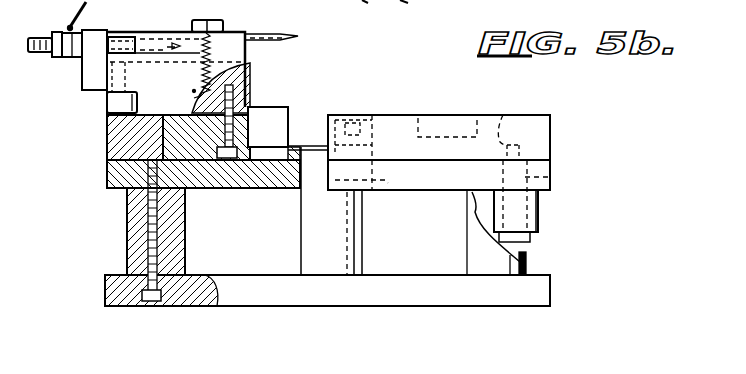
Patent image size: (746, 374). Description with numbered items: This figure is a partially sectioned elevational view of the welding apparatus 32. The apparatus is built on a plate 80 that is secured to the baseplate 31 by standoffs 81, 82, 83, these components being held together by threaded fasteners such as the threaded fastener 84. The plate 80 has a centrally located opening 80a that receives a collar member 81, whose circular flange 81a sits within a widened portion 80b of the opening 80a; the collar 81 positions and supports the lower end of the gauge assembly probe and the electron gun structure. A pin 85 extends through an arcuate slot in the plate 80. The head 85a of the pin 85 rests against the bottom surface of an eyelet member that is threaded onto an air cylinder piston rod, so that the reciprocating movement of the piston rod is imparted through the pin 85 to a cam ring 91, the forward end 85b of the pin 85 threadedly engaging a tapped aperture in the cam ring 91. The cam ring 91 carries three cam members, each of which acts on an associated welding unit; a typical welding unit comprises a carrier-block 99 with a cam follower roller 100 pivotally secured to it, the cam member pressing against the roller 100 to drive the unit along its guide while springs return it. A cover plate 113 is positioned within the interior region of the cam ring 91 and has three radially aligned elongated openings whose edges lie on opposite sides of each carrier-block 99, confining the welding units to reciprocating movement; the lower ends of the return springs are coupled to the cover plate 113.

The baseplate 31 is at (105, 288).
The welding apparatus 32 is at (420, 90).
The plate 80 is at (105, 178).
The opening 80a is at (284, 163).
The widened portion 80b is at (248, 188).
The collar member 81 is at (127, 229).
The circular flange 81a is at (285, 190).
The standoff 82 is at (355, 234).
The standoff 83 is at (470, 232).
The threaded fastener 84 is at (155, 301).
The pin 85 is at (552, 173).
The head 85a is at (530, 240).
The forward end 85b is at (500, 114).
The cam ring 91 is at (538, 143).
The carrier-block 99 is at (180, 100).
The cam follower roller 100 is at (107, 103).
The cover plate 113 is at (268, 107).